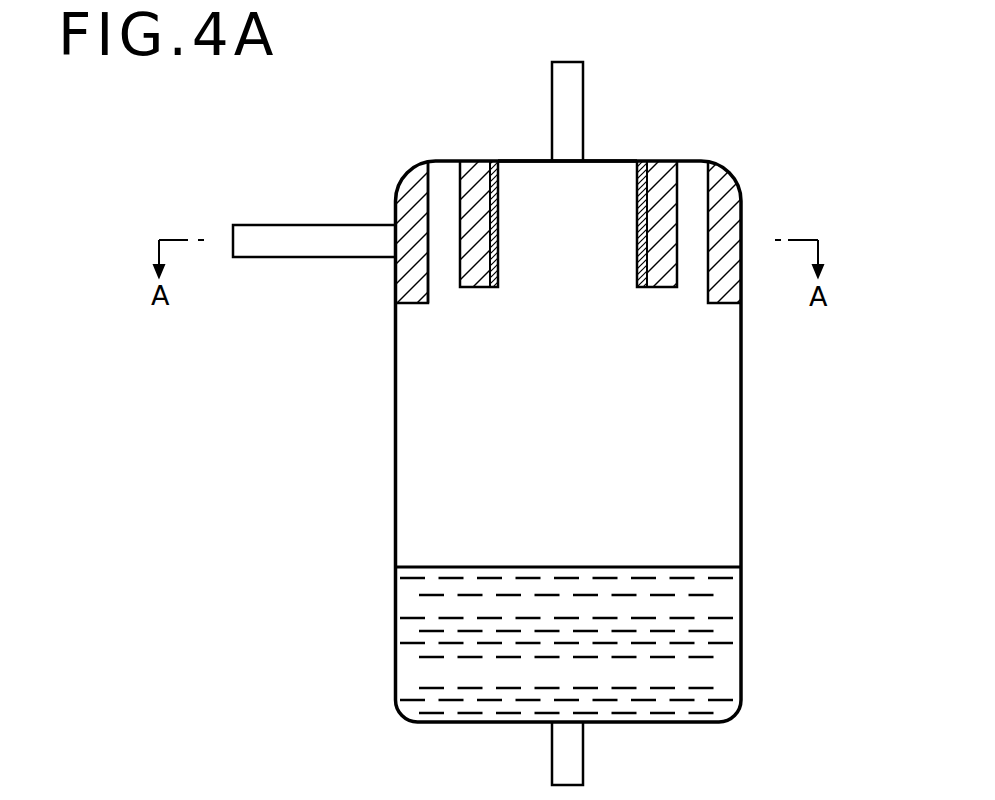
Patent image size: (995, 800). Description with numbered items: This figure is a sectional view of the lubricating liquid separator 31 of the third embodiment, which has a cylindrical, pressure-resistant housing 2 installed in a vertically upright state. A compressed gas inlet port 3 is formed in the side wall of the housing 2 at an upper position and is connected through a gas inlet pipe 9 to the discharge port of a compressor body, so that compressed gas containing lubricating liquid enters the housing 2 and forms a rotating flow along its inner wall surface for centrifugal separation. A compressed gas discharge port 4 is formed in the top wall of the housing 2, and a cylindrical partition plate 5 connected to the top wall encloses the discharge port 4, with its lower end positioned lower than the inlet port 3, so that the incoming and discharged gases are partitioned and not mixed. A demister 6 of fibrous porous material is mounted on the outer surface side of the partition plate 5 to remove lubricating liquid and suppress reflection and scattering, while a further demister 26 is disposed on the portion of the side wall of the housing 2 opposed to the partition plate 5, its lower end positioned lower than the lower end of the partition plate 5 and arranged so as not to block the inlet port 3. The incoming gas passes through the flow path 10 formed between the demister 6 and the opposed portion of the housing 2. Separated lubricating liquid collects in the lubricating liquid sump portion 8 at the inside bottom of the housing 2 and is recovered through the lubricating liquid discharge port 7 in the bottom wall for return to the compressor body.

The housing 2 is at (743, 483).
The compressed gas inlet port 3 is at (388, 238).
The compressed gas discharge port 4 is at (568, 158).
The partition plate 5 is at (637, 245).
The demister 6 is at (477, 273).
The lubricating liquid discharge port 7 is at (567, 723).
The lubricating liquid sump portion 8 is at (428, 630).
The gas inlet pipe 9 is at (273, 242).
The flow path 10 is at (443, 213).
The demister 26 is at (412, 303).
The lubricating liquid separator 31 is at (543, 426).